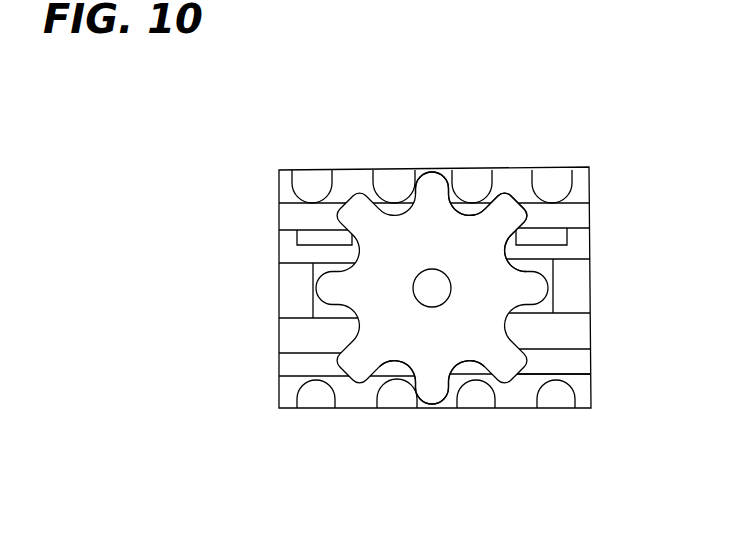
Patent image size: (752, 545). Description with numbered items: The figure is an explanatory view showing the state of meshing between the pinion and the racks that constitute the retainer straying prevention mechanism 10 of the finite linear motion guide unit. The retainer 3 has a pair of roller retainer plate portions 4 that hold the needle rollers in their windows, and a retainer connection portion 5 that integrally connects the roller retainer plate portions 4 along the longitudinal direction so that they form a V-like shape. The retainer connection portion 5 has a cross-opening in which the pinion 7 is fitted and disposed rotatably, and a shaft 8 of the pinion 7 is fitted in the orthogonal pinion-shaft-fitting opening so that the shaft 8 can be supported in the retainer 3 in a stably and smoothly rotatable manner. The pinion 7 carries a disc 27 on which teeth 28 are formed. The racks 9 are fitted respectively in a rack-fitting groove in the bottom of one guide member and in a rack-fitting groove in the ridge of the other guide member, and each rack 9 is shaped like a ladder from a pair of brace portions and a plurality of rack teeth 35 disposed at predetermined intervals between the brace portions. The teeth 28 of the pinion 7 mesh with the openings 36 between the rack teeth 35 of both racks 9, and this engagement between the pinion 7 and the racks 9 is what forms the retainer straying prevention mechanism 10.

The retainer straying prevention mechanism 10 is at (600, 167).
The retainer 3 is at (578, 248).
The retainer connection portion 5 is at (580, 290).
The roller retainer plate portions 4 is at (292, 334).
The pinion 7 is at (418, 260).
The disc 27 is at (447, 252).
The shaft 8 is at (432, 292).
The racks 9 is at (513, 177).
The teeth 28 is at (505, 362).
The rack teeth 35 is at (387, 393).
The openings 36 is at (582, 392).